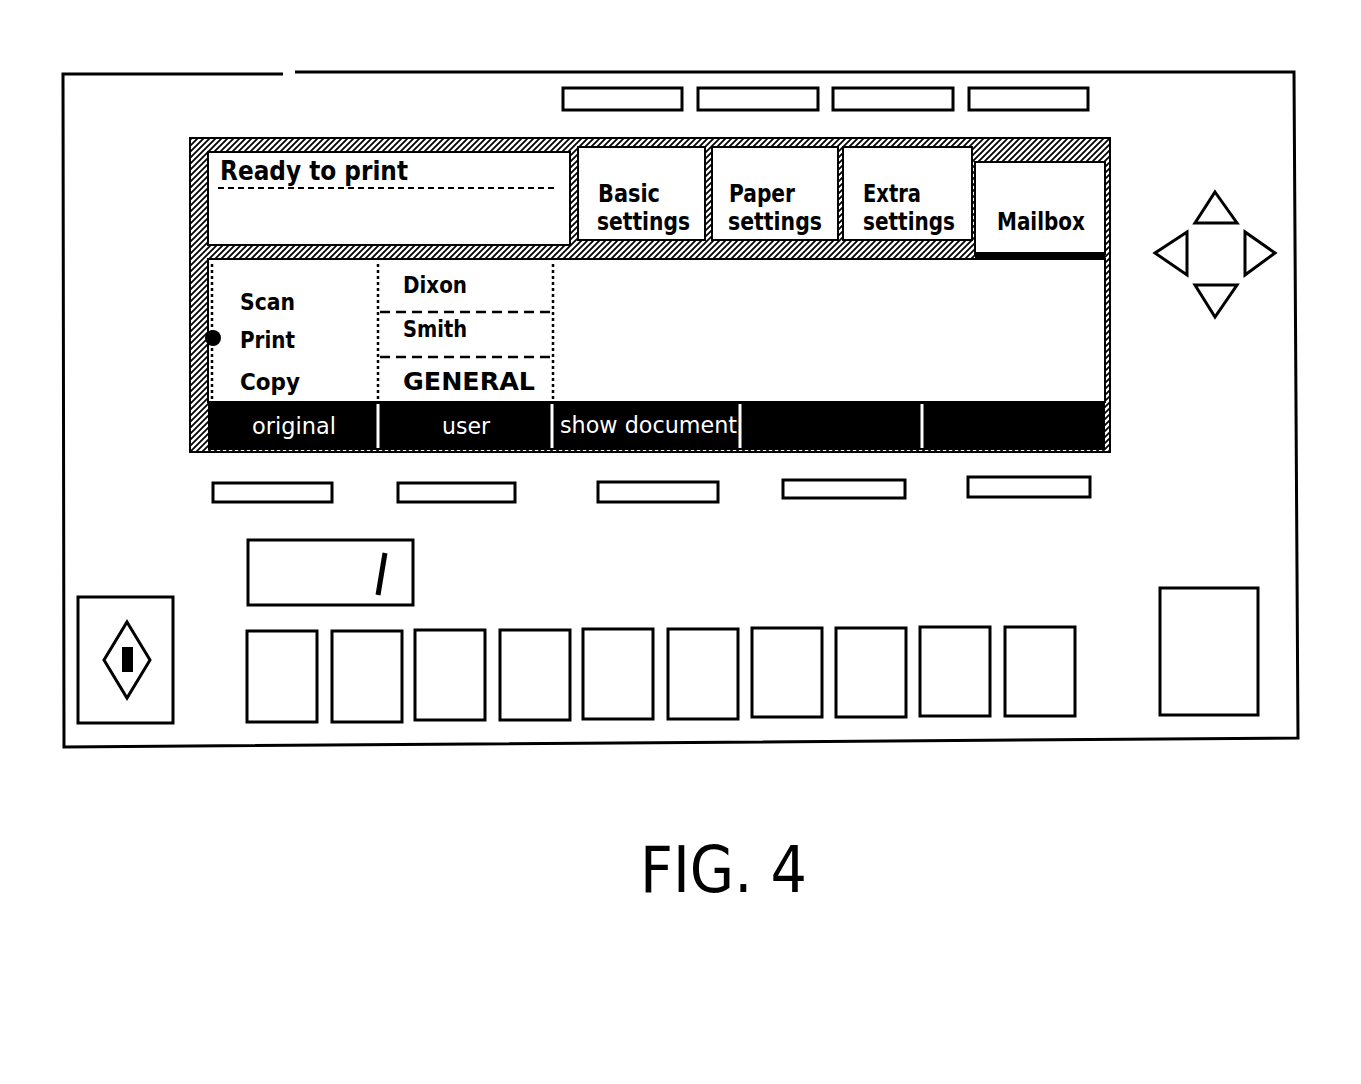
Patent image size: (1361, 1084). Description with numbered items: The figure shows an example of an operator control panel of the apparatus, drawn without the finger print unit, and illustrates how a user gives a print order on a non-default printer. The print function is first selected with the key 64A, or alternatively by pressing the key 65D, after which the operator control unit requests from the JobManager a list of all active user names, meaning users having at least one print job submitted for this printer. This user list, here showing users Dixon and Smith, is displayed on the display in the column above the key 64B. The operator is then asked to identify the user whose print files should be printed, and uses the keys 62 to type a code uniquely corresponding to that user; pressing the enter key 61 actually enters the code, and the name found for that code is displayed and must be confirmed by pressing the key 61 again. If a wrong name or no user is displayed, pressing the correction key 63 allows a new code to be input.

The enter key 61 is at (175, 687).
The keys 62 is at (1088, 667).
The correction key 63 is at (1258, 622).
The key 64A is at (213, 492).
The key 64B is at (475, 502).
The key 65D is at (1043, 88).